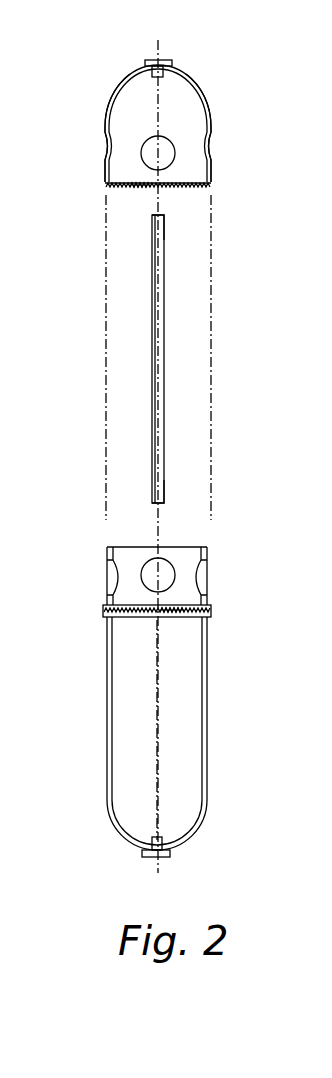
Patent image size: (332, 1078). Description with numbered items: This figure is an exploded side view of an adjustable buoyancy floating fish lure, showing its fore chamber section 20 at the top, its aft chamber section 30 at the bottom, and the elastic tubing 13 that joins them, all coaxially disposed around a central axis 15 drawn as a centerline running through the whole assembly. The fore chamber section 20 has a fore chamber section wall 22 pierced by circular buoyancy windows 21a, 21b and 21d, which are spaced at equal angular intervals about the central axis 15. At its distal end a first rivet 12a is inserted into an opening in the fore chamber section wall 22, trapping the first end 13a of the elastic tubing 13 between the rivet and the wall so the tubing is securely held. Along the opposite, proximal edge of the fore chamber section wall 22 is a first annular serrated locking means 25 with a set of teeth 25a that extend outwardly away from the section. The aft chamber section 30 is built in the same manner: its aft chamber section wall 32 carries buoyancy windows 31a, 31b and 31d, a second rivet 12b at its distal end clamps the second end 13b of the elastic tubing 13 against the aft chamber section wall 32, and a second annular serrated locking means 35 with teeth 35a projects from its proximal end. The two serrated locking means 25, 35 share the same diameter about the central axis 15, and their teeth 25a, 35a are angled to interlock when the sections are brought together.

The fore chamber section 20 is at (173, 122).
The fore chamber section wall 22 is at (193, 68).
The buoyancy window 21a is at (170, 159).
The buoyancy window 21b is at (213, 143).
The buoyancy window 21d is at (107, 150).
The first annular serrated locking means 25 is at (110, 187).
The teeth 25a is at (140, 190).
The first rivet 12a is at (143, 62).
The second rivet 12b is at (148, 855).
The elastic tubing 13 is at (165, 315).
The first end of the elastic tubing 13a is at (165, 218).
The second end of the elastic tubing 13b is at (163, 499).
The aft chamber section 30 is at (161, 688).
The buoyancy window 31a is at (148, 562).
The buoyancy window 31b is at (207, 590).
The buoyancy window 31d is at (117, 580).
The second annular serrated locking means 35 is at (178, 618).
The teeth 35a is at (176, 615).
The aft chamber section wall 32 is at (198, 830).
The central axis 15 is at (157, 690).